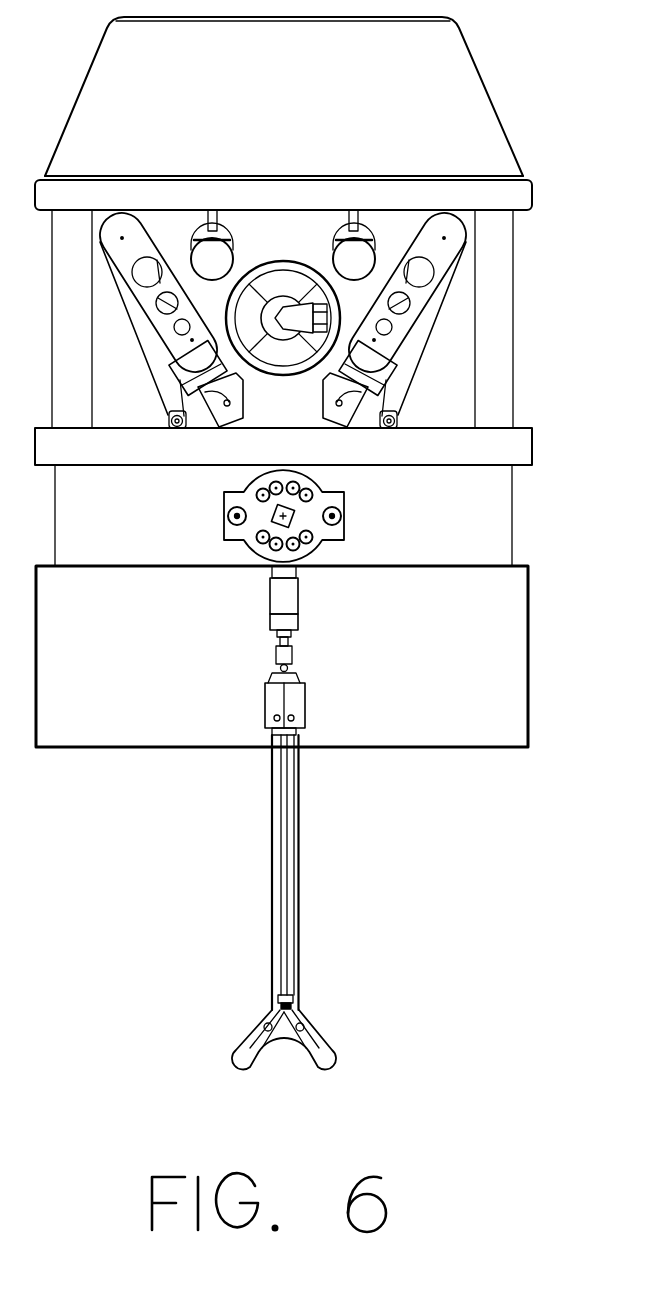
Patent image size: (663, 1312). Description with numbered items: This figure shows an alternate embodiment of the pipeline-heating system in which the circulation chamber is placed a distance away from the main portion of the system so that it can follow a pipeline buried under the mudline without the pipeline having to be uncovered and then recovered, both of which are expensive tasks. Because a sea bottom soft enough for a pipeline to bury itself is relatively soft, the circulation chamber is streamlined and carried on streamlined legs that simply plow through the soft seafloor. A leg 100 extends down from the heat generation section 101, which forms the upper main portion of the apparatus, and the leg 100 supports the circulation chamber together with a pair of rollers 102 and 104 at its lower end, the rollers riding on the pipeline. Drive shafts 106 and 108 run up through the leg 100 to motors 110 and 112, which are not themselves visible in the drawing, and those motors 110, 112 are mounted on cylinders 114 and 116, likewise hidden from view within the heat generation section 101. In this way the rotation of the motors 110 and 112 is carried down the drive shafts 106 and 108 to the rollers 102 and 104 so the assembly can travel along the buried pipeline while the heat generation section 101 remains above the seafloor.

The leg 100 is at (288, 872).
The heat generation section 101 is at (438, 750).
The roller 102 is at (333, 1052).
The roller 104 is at (238, 1048).
The drive shaft 106 is at (280, 957).
The drive shaft 108 is at (288, 945).
The motor 110 is at (389, 698).
The motor 112 is at (298, 702).
The cylinder 114 is at (391, 619).
The cylinder 116 is at (292, 622).